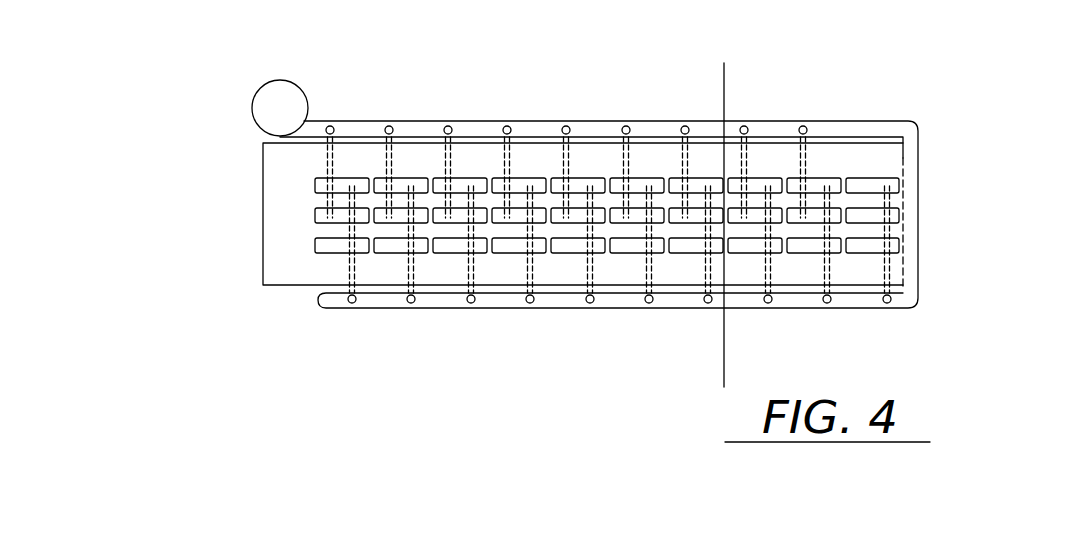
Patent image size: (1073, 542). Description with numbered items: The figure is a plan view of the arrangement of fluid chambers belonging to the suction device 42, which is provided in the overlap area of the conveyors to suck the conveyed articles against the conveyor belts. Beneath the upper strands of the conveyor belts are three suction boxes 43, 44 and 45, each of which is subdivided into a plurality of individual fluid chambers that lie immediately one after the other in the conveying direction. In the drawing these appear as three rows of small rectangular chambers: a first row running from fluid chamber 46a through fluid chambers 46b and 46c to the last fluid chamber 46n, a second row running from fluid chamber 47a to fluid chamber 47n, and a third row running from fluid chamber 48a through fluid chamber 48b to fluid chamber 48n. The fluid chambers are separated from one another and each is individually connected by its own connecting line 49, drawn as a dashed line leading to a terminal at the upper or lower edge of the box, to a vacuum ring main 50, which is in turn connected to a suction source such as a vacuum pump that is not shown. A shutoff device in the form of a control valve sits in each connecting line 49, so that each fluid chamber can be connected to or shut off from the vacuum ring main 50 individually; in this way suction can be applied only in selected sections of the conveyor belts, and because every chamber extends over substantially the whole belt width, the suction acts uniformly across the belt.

The suction device 42 is at (648, 114).
The suction box 43 is at (897, 252).
The suction box 44 is at (898, 173).
The suction box 45 is at (313, 219).
The fluid chamber 46a is at (322, 250).
The fluid chamber 46b is at (387, 247).
The fluid chamber 46c is at (450, 245).
The fluid chamber 46n is at (863, 253).
The fluid chamber 47a is at (343, 183).
The fluid chamber 47n is at (868, 187).
The fluid chamber 48a is at (315, 210).
The fluid chamber 48b is at (420, 210).
The fluid chamber 48n is at (895, 218).
The connecting lines 49 is at (648, 267).
The vacuum ring main 50 is at (266, 84).